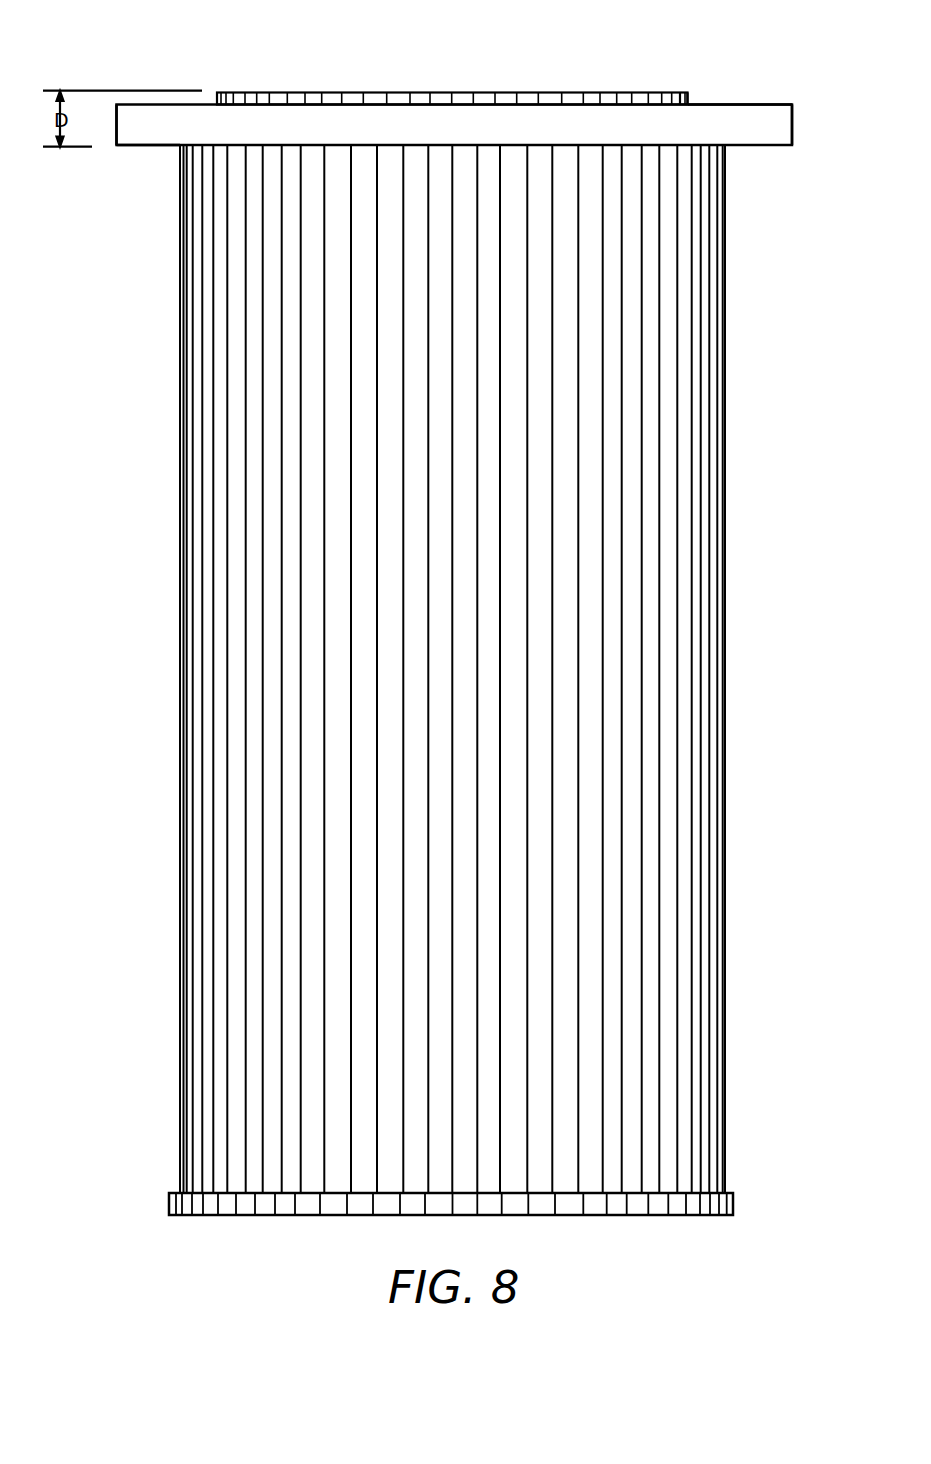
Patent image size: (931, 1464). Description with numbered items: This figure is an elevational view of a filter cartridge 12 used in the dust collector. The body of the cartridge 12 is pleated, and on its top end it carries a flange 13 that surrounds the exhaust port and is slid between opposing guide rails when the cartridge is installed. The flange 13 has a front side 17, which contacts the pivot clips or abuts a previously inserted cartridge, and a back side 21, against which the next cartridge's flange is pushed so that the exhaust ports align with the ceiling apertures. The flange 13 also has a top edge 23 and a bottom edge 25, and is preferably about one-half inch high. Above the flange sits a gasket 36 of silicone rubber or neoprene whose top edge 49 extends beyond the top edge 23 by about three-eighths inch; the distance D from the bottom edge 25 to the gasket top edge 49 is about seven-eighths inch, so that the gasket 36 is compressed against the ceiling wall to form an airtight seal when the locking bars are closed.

The filter cartridge 12 is at (635, 554).
The flange 13 is at (742, 137).
The front side of flange 17 is at (122, 131).
The back side of flange 21 is at (767, 122).
The top edge of flange 23 is at (720, 104).
The bottom edge of flange 25 is at (146, 147).
The gasket 36 is at (665, 98).
The top edge of gasket 49 is at (507, 93).